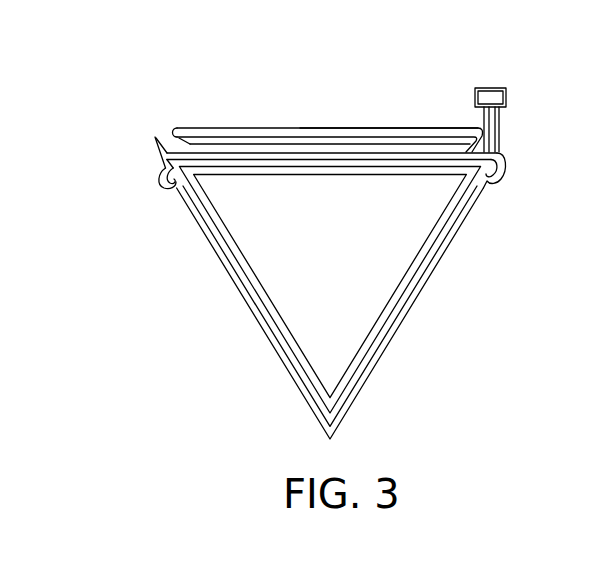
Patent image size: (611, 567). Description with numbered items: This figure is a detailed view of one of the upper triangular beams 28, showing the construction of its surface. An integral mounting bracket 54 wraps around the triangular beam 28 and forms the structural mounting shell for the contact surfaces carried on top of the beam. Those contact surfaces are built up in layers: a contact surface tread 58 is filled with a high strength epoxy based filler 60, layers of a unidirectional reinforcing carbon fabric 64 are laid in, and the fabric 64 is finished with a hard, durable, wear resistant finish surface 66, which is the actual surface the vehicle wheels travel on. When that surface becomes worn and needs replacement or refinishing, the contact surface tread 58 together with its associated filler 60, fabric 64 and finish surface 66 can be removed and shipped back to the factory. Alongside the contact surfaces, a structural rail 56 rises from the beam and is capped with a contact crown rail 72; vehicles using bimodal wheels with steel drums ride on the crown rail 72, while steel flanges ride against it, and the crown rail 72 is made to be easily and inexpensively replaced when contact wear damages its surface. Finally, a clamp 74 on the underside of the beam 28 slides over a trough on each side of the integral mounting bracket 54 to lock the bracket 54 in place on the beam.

The upper triangular beam 28 is at (398, 312).
The integral mounting bracket 54 is at (154, 136).
The structural rail 56 is at (499, 136).
The contact surface tread 58 is at (177, 129).
The high strength epoxy based filler 60 is at (263, 136).
The unidirectional reinforcing carbon fabric 64 is at (333, 150).
The finish surface 66 is at (385, 128).
The contact crown rail 72 is at (478, 90).
The clamp 74 is at (155, 190).